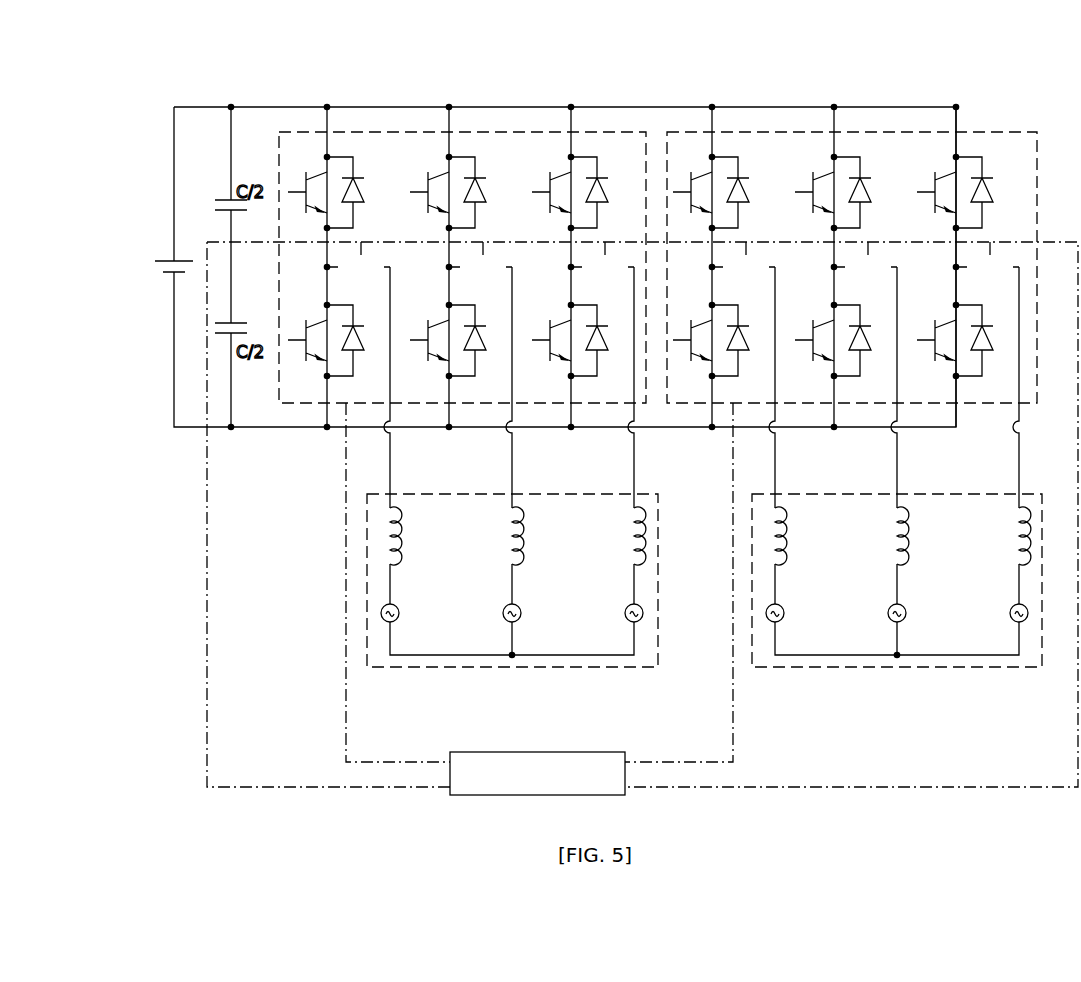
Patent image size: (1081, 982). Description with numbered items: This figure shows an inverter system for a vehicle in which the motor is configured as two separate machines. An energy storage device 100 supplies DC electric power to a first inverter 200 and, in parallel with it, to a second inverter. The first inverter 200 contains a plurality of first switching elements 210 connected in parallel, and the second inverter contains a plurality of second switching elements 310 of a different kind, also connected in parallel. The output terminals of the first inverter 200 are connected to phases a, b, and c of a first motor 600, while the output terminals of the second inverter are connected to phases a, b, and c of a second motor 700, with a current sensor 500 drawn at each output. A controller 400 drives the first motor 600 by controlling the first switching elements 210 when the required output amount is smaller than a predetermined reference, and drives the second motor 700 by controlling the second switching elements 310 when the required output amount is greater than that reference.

The energy storage device 100 is at (160, 261).
The first inverter 200 is at (312, 132).
The first switching element 210 is at (336, 155).
The second switching element 310 is at (721, 155).
The controller 400 is at (537, 773).
The current sensor 500 is at (673, 261).
The first motor 600 is at (410, 667).
The second motor 700 is at (978, 667).